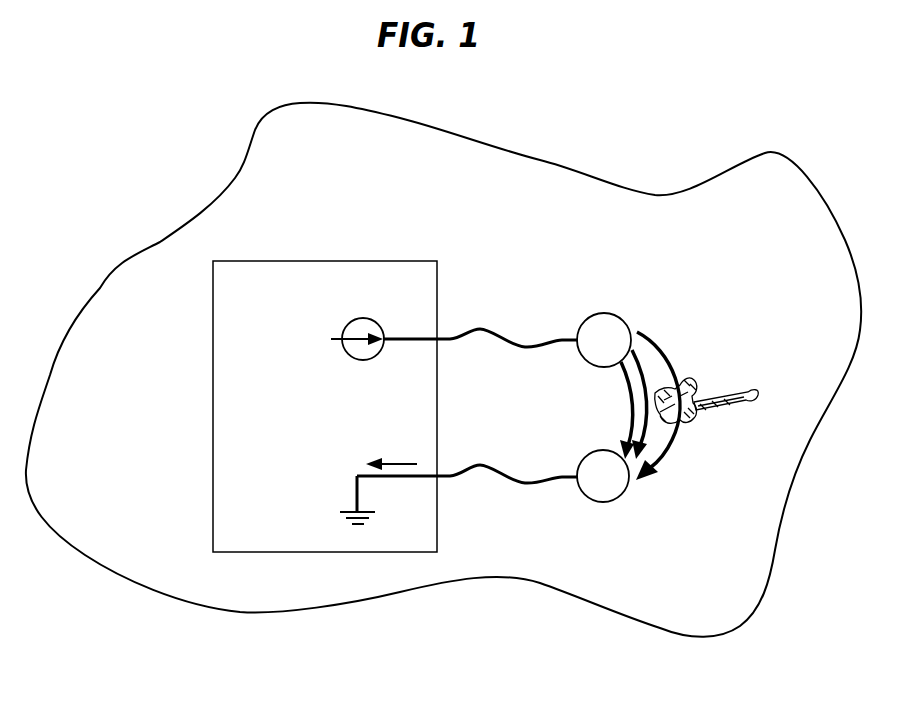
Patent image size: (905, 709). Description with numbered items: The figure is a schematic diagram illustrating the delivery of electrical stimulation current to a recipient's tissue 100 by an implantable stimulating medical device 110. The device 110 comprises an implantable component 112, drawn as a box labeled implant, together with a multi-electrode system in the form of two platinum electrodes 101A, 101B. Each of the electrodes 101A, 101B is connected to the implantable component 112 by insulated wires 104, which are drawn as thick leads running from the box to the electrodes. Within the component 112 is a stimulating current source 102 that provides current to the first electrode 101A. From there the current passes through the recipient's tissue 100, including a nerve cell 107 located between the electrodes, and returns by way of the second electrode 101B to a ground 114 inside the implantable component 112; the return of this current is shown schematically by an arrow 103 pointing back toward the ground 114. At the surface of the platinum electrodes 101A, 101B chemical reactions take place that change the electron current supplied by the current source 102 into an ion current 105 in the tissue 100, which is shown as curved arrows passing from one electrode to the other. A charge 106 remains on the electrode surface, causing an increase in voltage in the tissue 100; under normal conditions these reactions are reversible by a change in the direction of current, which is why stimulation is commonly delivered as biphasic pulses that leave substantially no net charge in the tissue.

The recipient's tissue 100 is at (440, 165).
The implantable stimulating medical device 110 is at (165, 172).
The implantable component 112 is at (317, 261).
The stimulating current source 102 is at (354, 356).
The arrow 103 is at (394, 462).
The insulated wires 104 is at (478, 331).
The ground 114 is at (340, 519).
The platinum electrode 101A is at (594, 316).
The platinum electrode 101B is at (592, 496).
The ion current 105 is at (643, 348).
The charge 106 is at (628, 490).
The nerve cell 107 is at (690, 386).